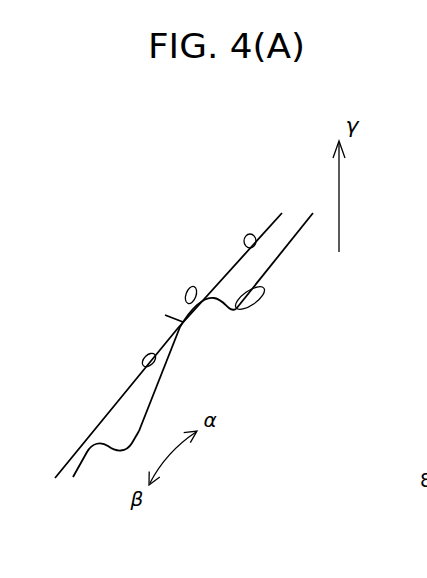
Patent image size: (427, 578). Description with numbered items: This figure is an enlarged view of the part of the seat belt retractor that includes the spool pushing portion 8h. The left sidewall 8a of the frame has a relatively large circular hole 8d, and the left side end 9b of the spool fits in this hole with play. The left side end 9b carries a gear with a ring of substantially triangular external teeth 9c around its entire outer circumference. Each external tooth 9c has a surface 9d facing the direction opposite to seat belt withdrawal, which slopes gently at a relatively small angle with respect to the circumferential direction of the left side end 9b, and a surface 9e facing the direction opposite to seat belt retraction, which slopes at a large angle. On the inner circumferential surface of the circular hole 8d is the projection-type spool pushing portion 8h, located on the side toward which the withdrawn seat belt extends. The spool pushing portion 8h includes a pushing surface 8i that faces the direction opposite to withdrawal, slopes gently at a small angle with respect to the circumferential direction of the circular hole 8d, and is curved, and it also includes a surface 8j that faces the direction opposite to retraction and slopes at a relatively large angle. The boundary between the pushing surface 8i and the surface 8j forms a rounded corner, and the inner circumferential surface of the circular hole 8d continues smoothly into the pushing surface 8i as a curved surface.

The left sidewall 8a is at (136, 234).
The circular hole 8d is at (250, 230).
The spool pushing portion 8h is at (178, 318).
The pushing surface 8i is at (142, 361).
The surface 8j is at (194, 285).
The left side end 9b is at (302, 344).
The external teeth 9c is at (210, 307).
The surface 9d is at (137, 428).
The surface 9e is at (266, 287).